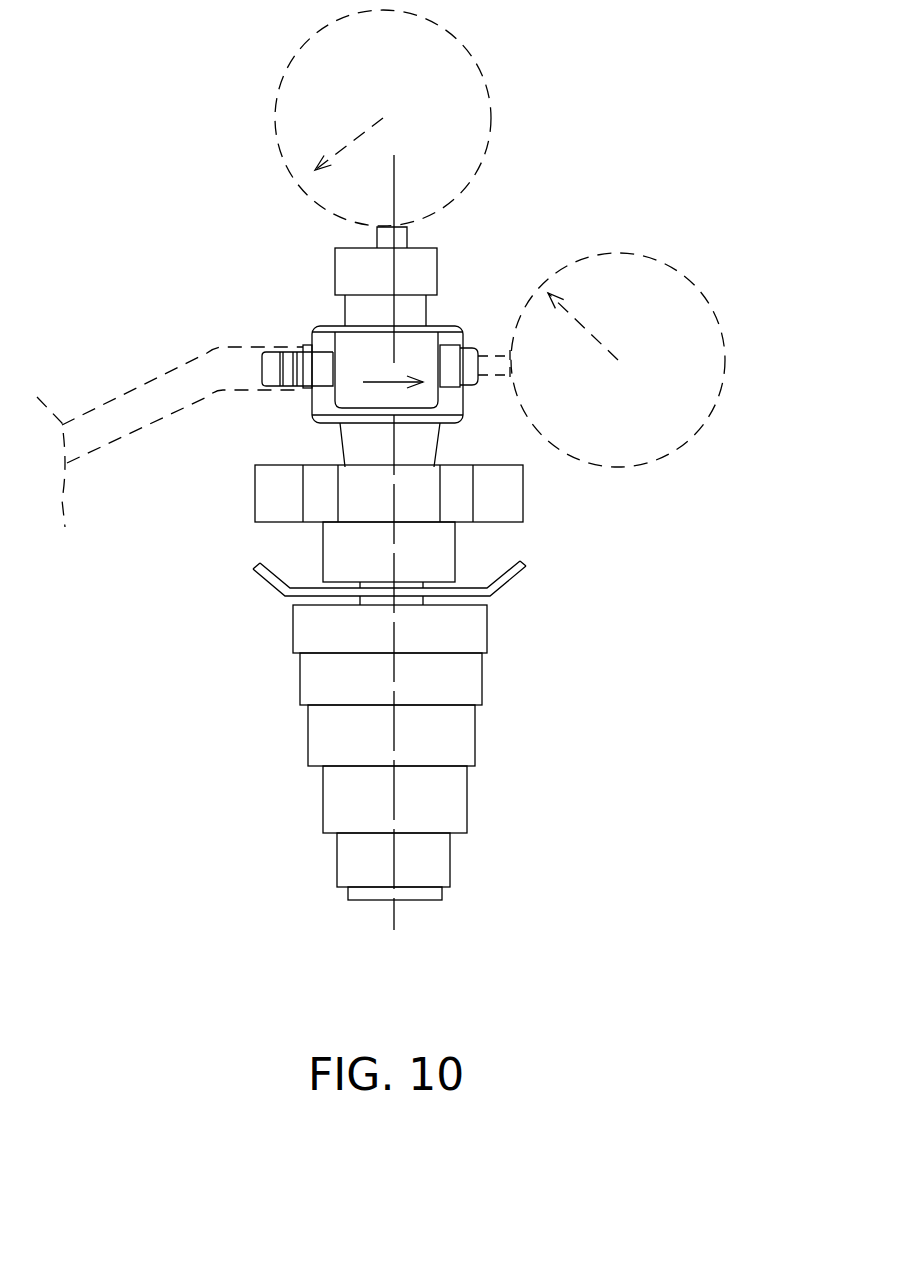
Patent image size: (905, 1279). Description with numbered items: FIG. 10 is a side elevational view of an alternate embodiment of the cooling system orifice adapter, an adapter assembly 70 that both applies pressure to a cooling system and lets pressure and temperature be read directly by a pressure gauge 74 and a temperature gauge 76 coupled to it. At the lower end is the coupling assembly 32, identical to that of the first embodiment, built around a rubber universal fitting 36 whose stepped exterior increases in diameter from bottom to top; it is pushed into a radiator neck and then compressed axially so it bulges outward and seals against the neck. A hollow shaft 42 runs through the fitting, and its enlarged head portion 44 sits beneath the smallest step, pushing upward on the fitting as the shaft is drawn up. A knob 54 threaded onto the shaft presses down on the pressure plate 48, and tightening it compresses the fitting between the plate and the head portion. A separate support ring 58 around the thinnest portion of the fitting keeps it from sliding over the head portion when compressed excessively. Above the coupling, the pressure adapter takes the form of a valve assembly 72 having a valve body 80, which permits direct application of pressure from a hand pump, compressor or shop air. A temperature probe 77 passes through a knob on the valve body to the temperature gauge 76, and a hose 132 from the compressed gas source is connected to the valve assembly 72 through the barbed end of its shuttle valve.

The coupling assembly 32 is at (562, 737).
The universal fitting 36 is at (487, 752).
The hollow shaft 42 is at (425, 583).
The enlarged head portion 44 is at (424, 928).
The pressure plate 48 is at (252, 593).
The knob 54 is at (253, 488).
The support ring 58 is at (345, 870).
The adapter assembly 70 is at (160, 651).
The valve assembly 72 is at (455, 316).
The pressure gauge 74 is at (653, 463).
The temperature gauge 76 is at (490, 95).
The temperature probe 77 is at (410, 232).
The valve body 80 is at (317, 422).
The hose 132 is at (107, 391).